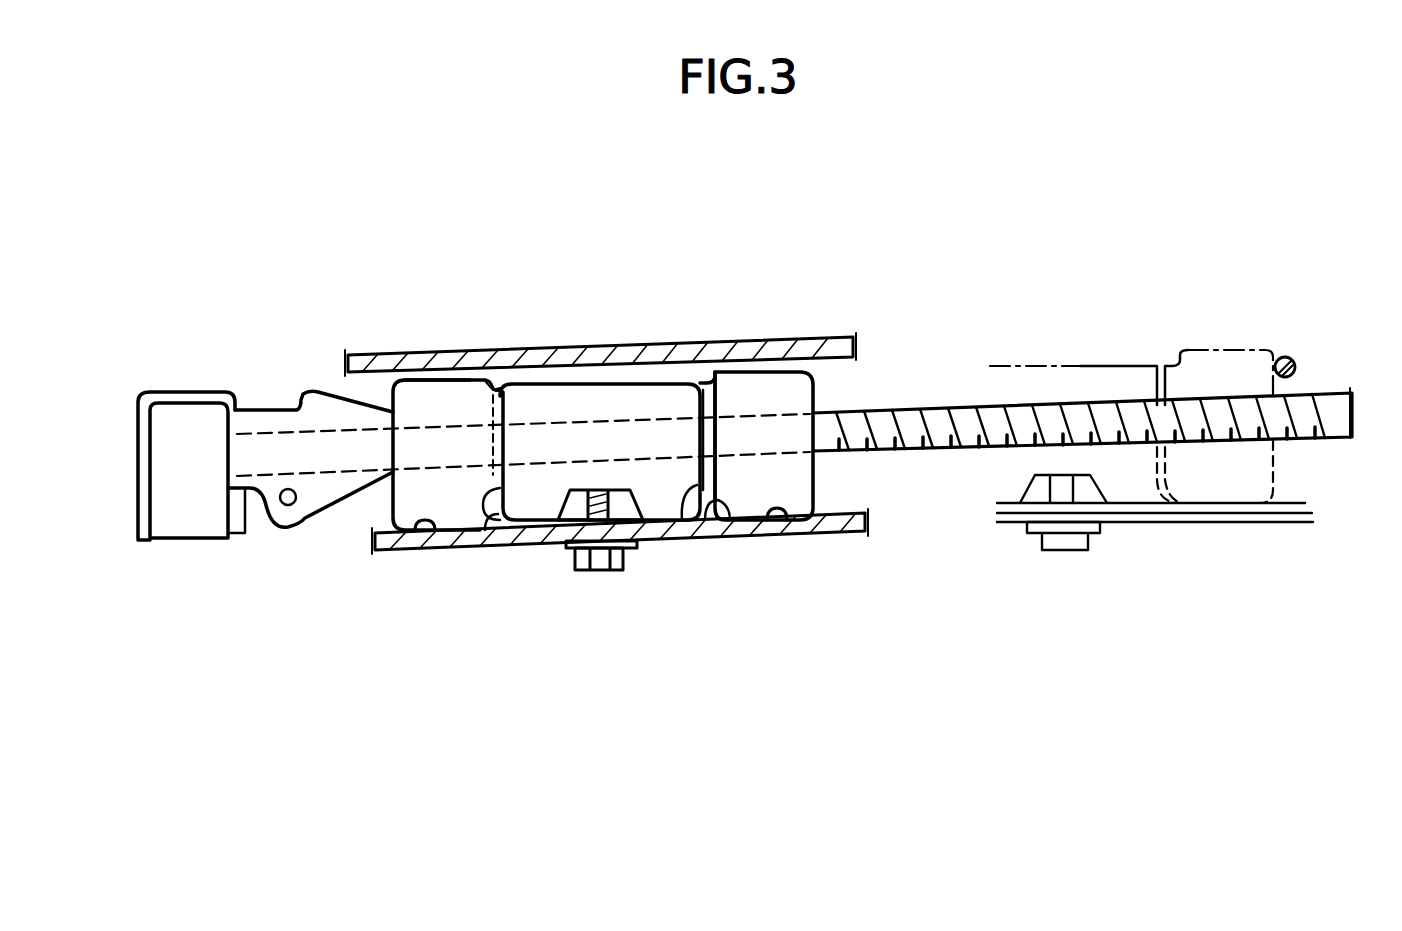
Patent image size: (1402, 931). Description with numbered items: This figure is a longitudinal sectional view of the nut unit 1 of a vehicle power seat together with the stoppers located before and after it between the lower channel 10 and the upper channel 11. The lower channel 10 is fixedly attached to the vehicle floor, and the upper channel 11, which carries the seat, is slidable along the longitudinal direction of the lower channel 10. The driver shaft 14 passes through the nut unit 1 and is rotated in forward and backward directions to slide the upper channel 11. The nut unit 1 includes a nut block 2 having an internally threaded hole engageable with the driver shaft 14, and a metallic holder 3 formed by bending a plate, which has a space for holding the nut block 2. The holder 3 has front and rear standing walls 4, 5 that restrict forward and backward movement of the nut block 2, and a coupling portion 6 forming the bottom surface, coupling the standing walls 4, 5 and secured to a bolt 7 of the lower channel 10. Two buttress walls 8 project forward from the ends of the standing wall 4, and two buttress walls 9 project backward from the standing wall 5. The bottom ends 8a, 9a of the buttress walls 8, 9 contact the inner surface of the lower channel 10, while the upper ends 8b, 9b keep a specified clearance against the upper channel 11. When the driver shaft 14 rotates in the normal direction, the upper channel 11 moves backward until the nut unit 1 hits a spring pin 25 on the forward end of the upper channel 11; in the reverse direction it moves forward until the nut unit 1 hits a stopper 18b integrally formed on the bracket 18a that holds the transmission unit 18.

The nut unit 1 is at (636, 347).
The nut block 2 is at (548, 395).
The holder 3 is at (493, 375).
The standing wall 4 is at (690, 512).
The standing wall 5 is at (500, 540).
The coupling portion 6 is at (645, 541).
The bolt 7 is at (592, 575).
The buttress wall 8 is at (803, 492).
The bottom end of buttress wall 8a is at (785, 522).
The upper end of buttress wall 8b is at (748, 372).
The buttress wall 9 is at (400, 500).
The bottom end of buttress wall 9a is at (437, 541).
The upper end of buttress wall 9b is at (440, 378).
The lower channel 10 is at (745, 532).
The upper channel 11 is at (815, 345).
The driver shaft 14 is at (899, 410).
The transmission unit 18 is at (182, 545).
The bracket 18a is at (330, 392).
The stopper 18b is at (390, 447).
The spring pin 25 is at (1292, 358).